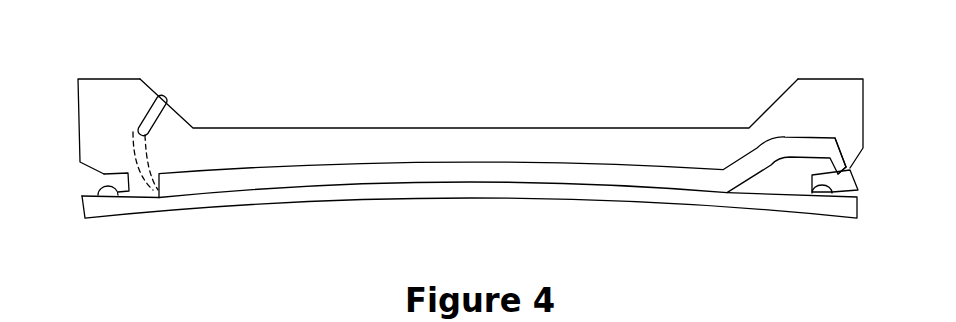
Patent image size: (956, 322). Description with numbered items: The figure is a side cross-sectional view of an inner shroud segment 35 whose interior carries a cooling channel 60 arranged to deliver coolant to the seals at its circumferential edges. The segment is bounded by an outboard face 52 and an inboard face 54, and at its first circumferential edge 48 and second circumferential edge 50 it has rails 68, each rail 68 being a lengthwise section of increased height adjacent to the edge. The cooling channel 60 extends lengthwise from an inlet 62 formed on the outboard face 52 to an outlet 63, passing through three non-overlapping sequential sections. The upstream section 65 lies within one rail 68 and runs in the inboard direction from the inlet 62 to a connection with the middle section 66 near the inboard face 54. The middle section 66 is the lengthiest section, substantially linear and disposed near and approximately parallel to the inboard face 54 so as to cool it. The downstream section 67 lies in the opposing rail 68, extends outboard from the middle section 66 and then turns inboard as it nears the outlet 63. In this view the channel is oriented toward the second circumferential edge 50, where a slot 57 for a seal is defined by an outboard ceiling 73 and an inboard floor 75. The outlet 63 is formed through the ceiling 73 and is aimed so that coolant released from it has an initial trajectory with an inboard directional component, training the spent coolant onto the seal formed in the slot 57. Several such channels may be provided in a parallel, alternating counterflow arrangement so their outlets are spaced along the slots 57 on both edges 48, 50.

The inner shroud segment 35 is at (477, 110).
The first circumferential edge 48 is at (78, 115).
The second circumferential edge 50 is at (863, 97).
The outboard face 52 is at (247, 128).
The inboard face 54 is at (213, 210).
The slot 57 is at (72, 188).
The cooling channel 60 is at (320, 176).
The inlet 62 is at (166, 93).
The outlet 63 is at (862, 158).
The upstream section 65 is at (153, 123).
The middle section 66 is at (428, 176).
The downstream section 67 is at (803, 147).
The rail 68 is at (124, 125).
The ceiling 73 is at (110, 177).
The floor 75 is at (113, 194).